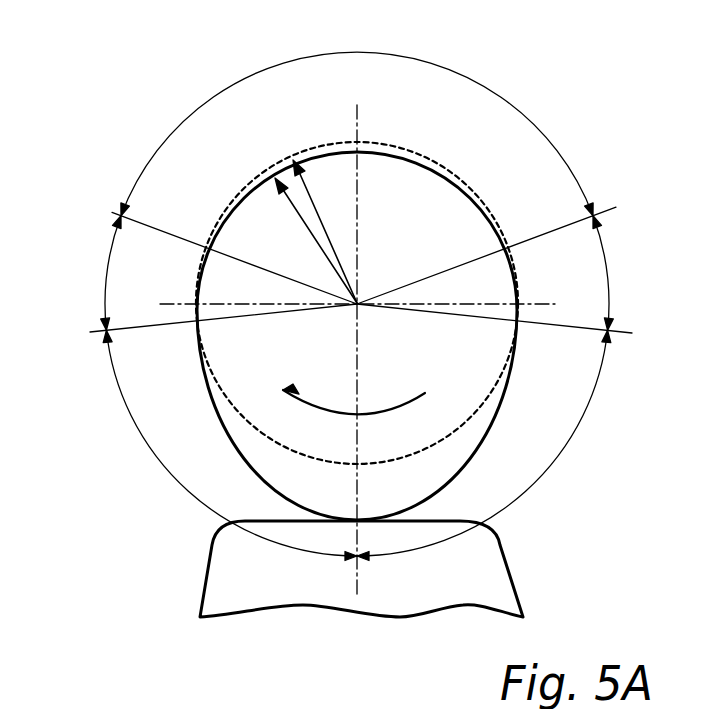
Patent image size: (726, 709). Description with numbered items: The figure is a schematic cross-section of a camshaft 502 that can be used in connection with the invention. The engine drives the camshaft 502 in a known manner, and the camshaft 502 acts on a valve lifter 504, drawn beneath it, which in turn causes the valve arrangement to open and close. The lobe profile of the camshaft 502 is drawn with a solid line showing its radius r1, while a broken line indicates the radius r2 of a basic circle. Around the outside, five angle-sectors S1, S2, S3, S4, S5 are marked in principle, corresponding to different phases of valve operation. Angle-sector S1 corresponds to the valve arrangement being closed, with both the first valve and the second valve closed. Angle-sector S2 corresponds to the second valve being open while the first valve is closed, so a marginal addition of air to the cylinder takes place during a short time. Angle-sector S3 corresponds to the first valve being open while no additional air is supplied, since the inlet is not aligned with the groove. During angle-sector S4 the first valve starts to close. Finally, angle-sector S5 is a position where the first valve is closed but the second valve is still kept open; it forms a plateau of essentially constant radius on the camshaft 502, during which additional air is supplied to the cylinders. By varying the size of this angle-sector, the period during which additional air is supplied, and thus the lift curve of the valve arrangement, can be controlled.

The angle-sector S1 is at (222, 92).
The angle-sector S2 is at (108, 266).
The angle-sector S3 is at (147, 445).
The angle-sector S4 is at (547, 472).
The angle-sector S5 is at (608, 268).
The camshaft 502 is at (452, 203).
The valve lifter 504 is at (217, 585).
The radius of the camshaft r1 is at (316, 240).
The radius of a basic circle r2 is at (325, 231).